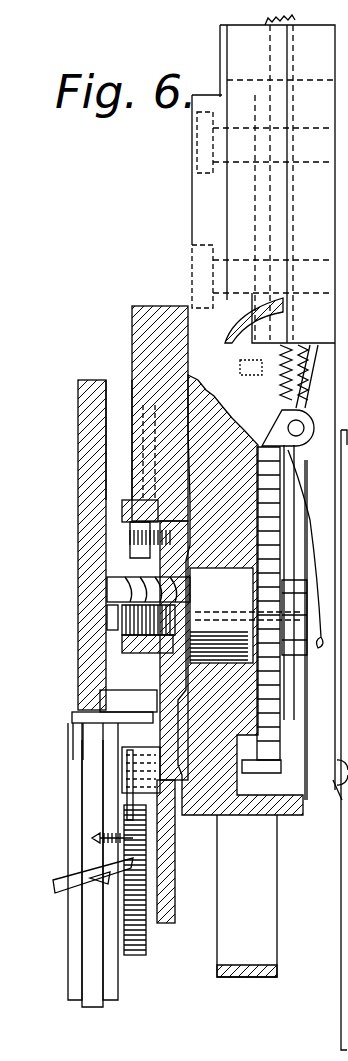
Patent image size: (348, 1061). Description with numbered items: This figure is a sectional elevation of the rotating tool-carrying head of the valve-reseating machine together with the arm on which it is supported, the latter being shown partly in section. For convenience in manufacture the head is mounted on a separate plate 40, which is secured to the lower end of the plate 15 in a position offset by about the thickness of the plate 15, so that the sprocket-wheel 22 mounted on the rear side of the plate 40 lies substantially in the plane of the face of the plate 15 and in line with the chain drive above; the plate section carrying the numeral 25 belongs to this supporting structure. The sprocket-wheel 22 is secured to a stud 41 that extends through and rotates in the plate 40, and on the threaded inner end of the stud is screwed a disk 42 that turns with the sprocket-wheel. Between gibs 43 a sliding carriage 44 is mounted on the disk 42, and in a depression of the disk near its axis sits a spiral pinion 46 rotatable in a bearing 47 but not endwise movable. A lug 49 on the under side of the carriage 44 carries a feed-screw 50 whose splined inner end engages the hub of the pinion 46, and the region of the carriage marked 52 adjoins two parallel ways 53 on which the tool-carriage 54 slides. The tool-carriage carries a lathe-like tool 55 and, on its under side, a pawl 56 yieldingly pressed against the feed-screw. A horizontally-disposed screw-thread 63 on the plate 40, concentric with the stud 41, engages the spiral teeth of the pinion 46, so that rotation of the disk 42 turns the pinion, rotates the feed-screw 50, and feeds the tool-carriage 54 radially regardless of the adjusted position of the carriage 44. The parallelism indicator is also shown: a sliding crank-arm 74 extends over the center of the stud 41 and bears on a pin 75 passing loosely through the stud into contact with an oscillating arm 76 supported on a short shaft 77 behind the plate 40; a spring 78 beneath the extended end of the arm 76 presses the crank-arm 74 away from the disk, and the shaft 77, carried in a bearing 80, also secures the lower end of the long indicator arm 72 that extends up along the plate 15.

The plate 15 is at (307, 189).
The sprocket-wheel 22 is at (267, 545).
The housing wall 25 is at (234, 218).
The plate 40 is at (187, 241).
The stud 41 is at (245, 615).
The disk 42 is at (138, 334).
The gibs 43 is at (347, 867).
The sliding carriage 44 is at (93, 423).
The spiral pinion 46 is at (112, 596).
The bearing 47 is at (125, 517).
The lug 49 is at (127, 705).
The feed-screw 50 is at (133, 960).
The block 52 is at (123, 768).
The ways 53 is at (93, 1003).
The tool-carriage 54 is at (71, 748).
The tool 55 is at (58, 880).
The pawl 56 is at (137, 798).
The screw-thread 63 is at (157, 493).
The arm 72 is at (268, 22).
The crank-arm 74 is at (107, 623).
The pin 75 is at (316, 645).
The oscillating arm 76 is at (293, 462).
The shaft 77 is at (308, 424).
The spring 78 is at (302, 408).
The bearing 80 is at (269, 420).